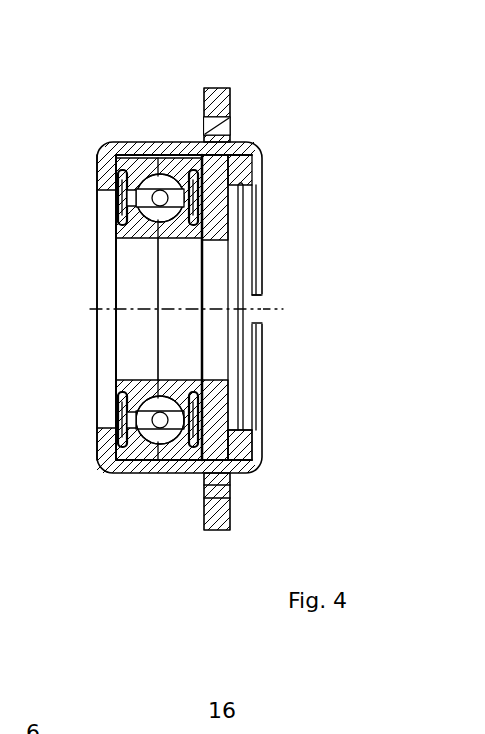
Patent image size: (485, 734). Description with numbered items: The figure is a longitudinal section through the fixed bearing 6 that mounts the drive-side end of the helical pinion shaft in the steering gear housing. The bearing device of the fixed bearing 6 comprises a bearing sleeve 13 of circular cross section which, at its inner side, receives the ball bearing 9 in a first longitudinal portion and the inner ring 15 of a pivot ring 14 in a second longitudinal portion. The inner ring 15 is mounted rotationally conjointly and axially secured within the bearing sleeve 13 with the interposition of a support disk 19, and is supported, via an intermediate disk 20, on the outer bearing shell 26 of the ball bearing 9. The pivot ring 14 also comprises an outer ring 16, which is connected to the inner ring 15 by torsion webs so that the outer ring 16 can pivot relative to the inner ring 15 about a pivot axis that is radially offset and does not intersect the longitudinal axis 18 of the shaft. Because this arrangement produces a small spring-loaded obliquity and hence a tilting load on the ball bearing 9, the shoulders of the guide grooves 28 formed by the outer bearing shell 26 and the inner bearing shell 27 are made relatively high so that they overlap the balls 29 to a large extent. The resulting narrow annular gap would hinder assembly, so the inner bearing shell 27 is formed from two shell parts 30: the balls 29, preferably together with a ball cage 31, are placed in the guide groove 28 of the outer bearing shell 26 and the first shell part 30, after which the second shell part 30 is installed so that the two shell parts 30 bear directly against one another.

The fixed bearing 6 is at (78, 106).
The ball bearing 9 is at (106, 166).
The bearing sleeve 13 is at (153, 158).
The pivot ring 14 is at (228, 97).
The inner ring 15 is at (220, 175).
The outer ring 16 is at (222, 95).
The longitudinal axis 18 is at (285, 310).
The support disk 19 is at (248, 457).
The intermediate disk 20 is at (200, 460).
The outer bearing shell 26 is at (142, 455).
The inner bearing shell 27 is at (113, 393).
The guide grooves 28 is at (148, 170).
The balls 29 is at (158, 198).
The shell parts 30 is at (173, 390).
The ball cage 31 is at (140, 200).